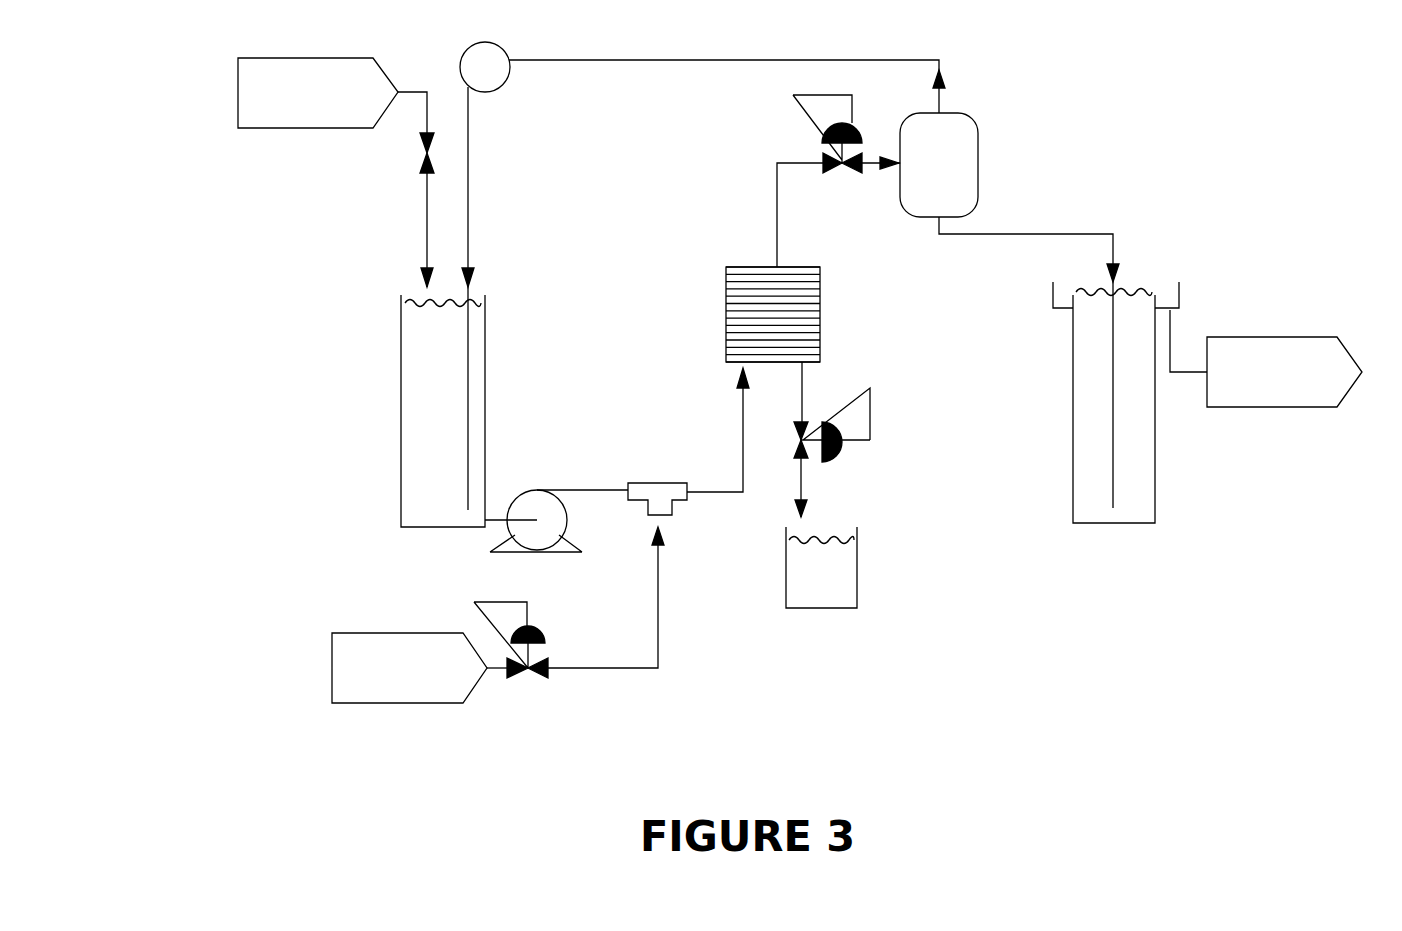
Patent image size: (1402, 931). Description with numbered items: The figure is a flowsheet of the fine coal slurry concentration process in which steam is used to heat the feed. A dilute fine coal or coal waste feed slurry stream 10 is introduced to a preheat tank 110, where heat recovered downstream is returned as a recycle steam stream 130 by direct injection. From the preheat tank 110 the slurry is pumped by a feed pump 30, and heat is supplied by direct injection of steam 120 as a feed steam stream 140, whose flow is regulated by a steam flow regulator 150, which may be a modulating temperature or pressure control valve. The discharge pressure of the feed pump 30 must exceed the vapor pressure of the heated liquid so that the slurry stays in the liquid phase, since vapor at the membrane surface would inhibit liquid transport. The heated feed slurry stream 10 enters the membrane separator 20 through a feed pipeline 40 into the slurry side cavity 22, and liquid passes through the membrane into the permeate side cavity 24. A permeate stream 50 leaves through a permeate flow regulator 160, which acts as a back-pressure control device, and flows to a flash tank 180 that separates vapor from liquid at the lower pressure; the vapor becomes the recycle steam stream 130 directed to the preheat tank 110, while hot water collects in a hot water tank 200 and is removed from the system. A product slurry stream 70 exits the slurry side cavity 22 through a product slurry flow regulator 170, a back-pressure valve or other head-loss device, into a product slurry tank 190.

The feed slurry stream 10 is at (238, 97).
The membrane separator 20 is at (726, 312).
The slurry side cavity 22 is at (727, 362).
The permeate side cavity 24 is at (727, 267).
The feed pump 30 is at (540, 492).
The feed pipeline 40 is at (743, 422).
The permeate stream 50 is at (777, 203).
The product slurry stream 70 is at (802, 385).
The preheat tank 110 is at (402, 400).
The steam 120 is at (407, 703).
The recycle steam stream 130 is at (822, 60).
The feed steam stream 140 is at (658, 630).
The steam flow regulator 150 is at (529, 672).
The permeate flow regulator 160 is at (842, 172).
The product slurry flow regulator 170 is at (870, 418).
The flash tank 180 is at (978, 160).
The product slurry tank 190 is at (857, 550).
The hot water tank 200 is at (1155, 453).